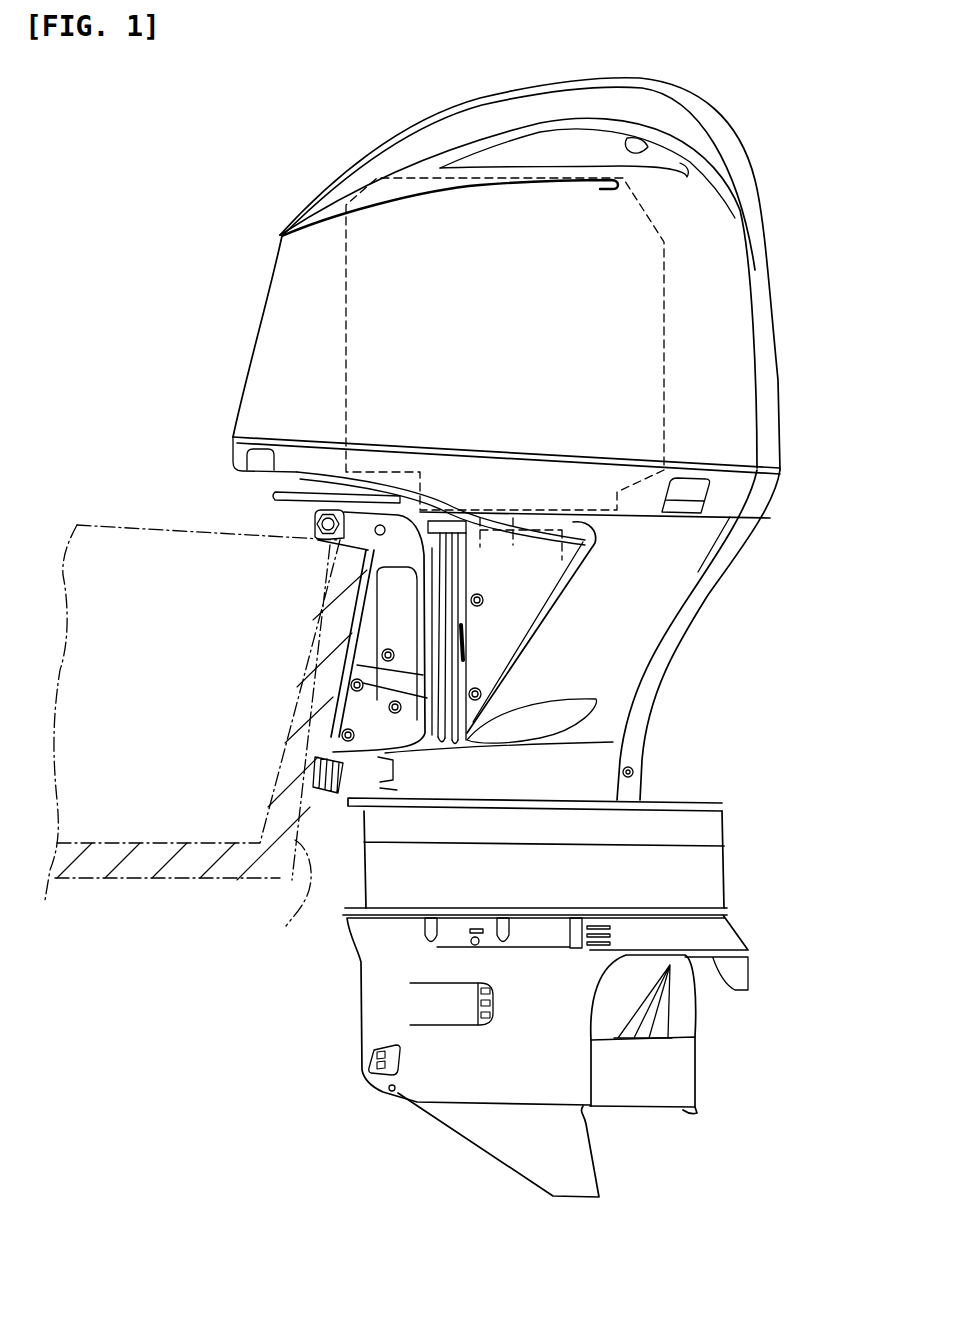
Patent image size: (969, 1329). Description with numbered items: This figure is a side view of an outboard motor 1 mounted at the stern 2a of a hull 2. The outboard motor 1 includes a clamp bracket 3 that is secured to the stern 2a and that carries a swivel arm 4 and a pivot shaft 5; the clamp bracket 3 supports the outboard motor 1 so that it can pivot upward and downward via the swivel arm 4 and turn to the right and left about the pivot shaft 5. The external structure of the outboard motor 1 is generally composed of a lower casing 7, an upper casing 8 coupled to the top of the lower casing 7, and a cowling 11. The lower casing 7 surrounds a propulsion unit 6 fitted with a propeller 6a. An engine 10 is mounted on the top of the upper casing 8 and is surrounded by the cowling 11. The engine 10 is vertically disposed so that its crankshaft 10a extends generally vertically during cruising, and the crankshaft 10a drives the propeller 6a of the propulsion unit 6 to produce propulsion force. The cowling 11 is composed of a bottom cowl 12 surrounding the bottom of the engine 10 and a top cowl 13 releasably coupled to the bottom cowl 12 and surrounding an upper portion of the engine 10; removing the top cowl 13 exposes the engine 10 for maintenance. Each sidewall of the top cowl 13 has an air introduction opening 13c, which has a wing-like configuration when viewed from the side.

The outboard motor 1 is at (795, 122).
The hull 2 is at (92, 525).
The stern 2a is at (303, 930).
The clamp bracket 3 is at (343, 663).
The swivel arm 4 is at (432, 602).
The pivot shaft 5 is at (447, 565).
The propulsion unit 6 is at (700, 1030).
The propeller 6a is at (670, 1112).
The lower casing 7 is at (362, 969).
The upper casing 8 is at (660, 712).
The engine 10 is at (343, 297).
The crankshaft 10a is at (562, 560).
The cowling 11 is at (862, 436).
The bottom cowl 12 is at (777, 498).
The top cowl 13 is at (780, 427).
The air introduction opening 13c is at (648, 147).